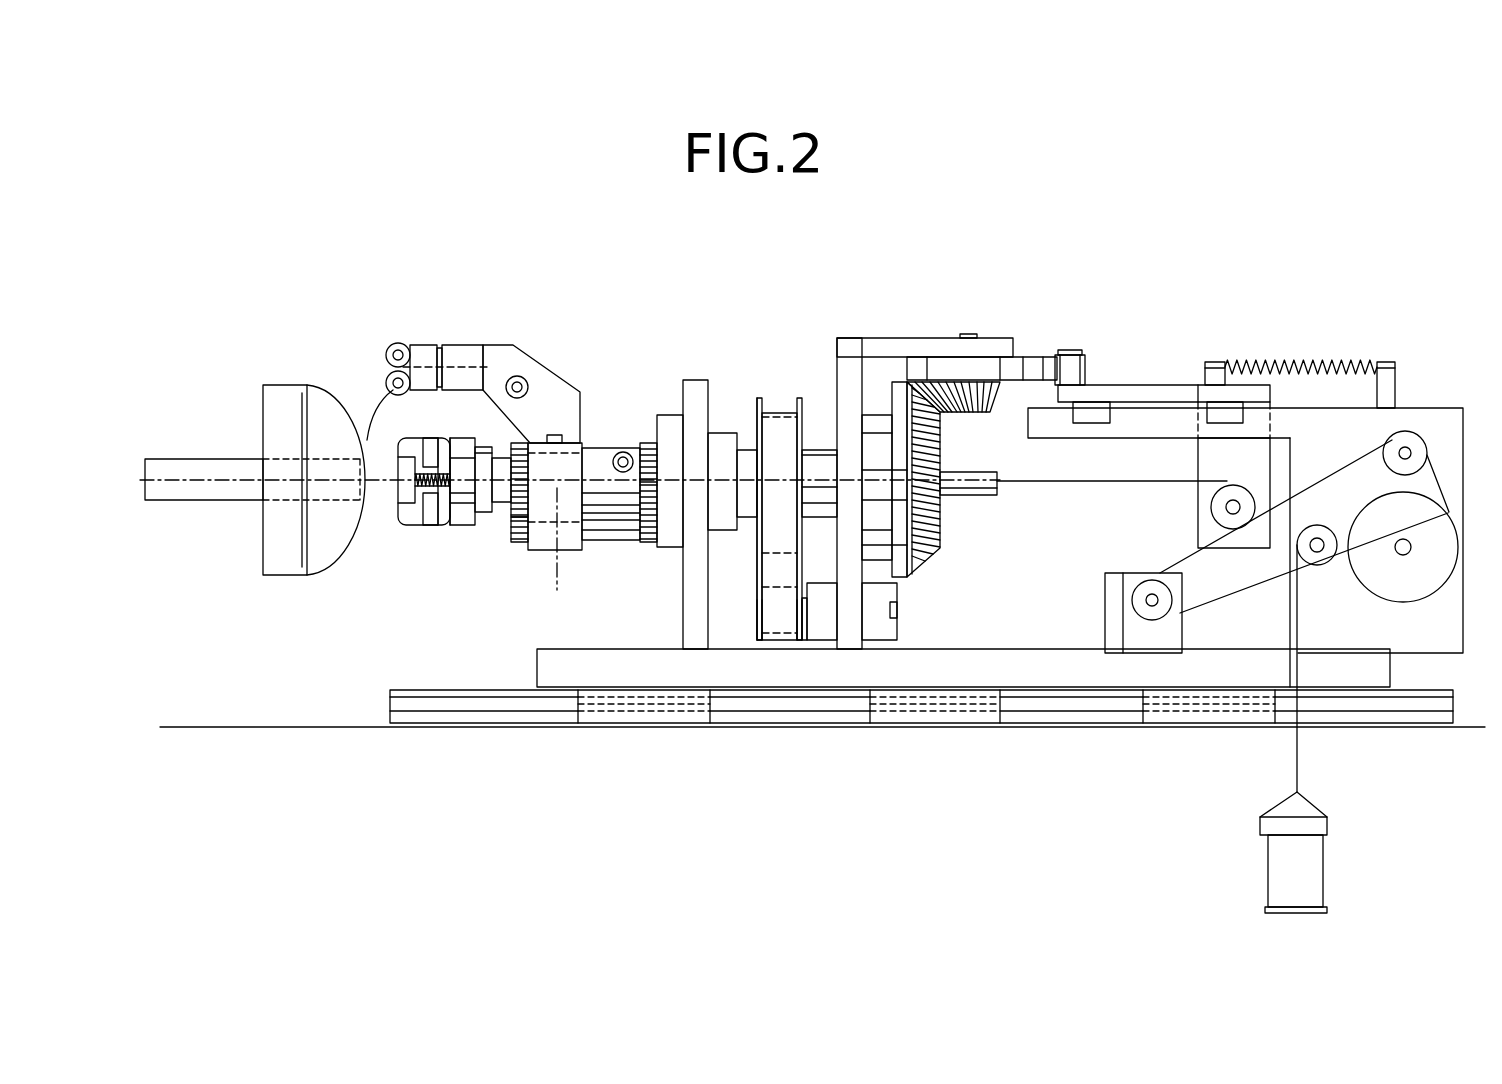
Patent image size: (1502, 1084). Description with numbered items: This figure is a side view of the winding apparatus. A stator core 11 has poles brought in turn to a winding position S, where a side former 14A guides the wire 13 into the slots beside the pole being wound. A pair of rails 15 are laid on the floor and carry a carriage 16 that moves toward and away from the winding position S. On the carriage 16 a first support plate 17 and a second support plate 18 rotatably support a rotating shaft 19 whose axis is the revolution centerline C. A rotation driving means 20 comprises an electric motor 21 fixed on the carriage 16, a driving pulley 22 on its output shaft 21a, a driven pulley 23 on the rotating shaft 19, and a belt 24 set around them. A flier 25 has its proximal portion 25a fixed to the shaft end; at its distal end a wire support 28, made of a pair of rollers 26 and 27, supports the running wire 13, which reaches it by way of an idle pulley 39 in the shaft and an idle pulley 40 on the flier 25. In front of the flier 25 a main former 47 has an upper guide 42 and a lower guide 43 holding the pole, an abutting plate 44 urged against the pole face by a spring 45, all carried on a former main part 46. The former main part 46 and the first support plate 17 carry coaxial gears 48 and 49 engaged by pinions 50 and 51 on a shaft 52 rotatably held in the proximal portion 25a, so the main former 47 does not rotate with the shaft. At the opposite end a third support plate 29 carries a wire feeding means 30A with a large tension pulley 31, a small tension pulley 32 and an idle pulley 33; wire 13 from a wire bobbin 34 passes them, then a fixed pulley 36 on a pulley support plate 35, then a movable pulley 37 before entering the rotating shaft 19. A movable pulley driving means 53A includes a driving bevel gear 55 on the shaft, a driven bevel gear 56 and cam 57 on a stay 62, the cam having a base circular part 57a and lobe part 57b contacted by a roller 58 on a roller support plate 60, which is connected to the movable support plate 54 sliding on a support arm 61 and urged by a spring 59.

The stator core 11 is at (220, 466).
The side former 14A is at (287, 558).
The winding position S is at (369, 494).
The roller 26 is at (386, 352).
The wire support 28 is at (391, 343).
The roller 27 is at (403, 392).
The idle pulley 40 is at (517, 376).
The flier 25 is at (573, 398).
The upper guide 42 is at (405, 450).
The abutting plate 44 is at (402, 493).
The lower guide 43 is at (410, 512).
The spring 45 is at (440, 497).
The main former 47 is at (461, 532).
The former main part 46 is at (482, 452).
The gear 48 is at (522, 440).
The pinion 50 is at (513, 540).
The proximal portion 25a is at (562, 550).
The revolution centerline C is at (541, 554).
The idle pulley 39 is at (624, 452).
The shaft 52 is at (613, 540).
The pinion 51 is at (648, 545).
The gear 49 is at (652, 483).
The first support plate 17 is at (683, 605).
The rotation driving means 20 is at (753, 408).
The driven pulley 23 is at (757, 430).
The spool body 24 is at (775, 412).
The driving pulley 22 is at (755, 618).
The rotating shaft 19 is at (822, 460).
The second support plate 18 is at (862, 600).
The movable pulley driving means 53A is at (1037, 347).
The electric motor 21 is at (878, 623).
The output shaft 21a is at (806, 606).
The driving bevel gear 55 is at (927, 553).
The driven bevel gear 56 is at (978, 400).
The cam 57 is at (942, 357).
The base circular part 57a is at (915, 357).
The lobe part 57b is at (1060, 360).
The roller 58 is at (1085, 372).
The stay 62 is at (968, 334).
The roller support plate 60 is at (1125, 395).
The support arm 61 is at (1175, 420).
The spring 59 is at (1280, 362).
The third support plate 29 is at (1440, 420).
The movable support plate 54 is at (1210, 462).
The wire 13 is at (1093, 484).
The movable pulley 37 is at (1215, 515).
The idle pulley 33 is at (1398, 445).
The tension pulley 31 is at (1380, 582).
The tension pulley 32 is at (1316, 568).
The fixed pulley 36 is at (1140, 595).
The pulley support plate 35 is at (1112, 615).
The wire feeding means 30A is at (1419, 595).
The wire bobbin 34 is at (1320, 826).
The carriage 16 is at (1003, 668).
The rail 15 is at (1088, 712).